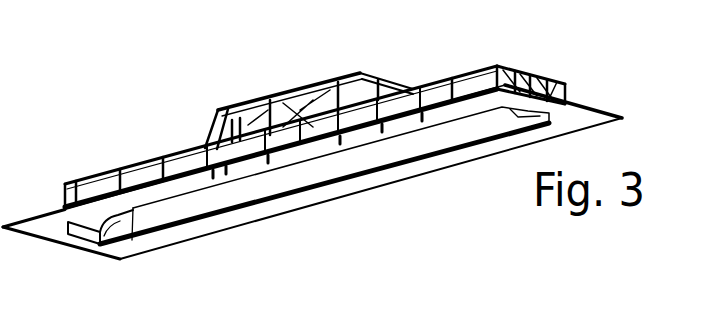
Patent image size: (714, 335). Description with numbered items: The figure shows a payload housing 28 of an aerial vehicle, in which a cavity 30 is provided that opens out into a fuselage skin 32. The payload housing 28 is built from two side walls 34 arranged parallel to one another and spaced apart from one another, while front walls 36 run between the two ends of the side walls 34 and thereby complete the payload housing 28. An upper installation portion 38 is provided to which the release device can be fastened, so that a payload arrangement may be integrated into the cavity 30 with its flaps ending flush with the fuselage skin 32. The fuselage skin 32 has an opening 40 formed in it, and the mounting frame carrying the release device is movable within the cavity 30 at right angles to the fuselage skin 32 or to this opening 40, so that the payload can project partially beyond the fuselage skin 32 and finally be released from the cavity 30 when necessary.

The payload housing 28 is at (146, 97).
The cavity 30 is at (243, 196).
The fuselage skin 32 is at (433, 171).
The side walls 34 is at (105, 186).
The front walls 36 is at (533, 77).
The upper installation portion 38 is at (371, 71).
The opening 40 is at (340, 188).